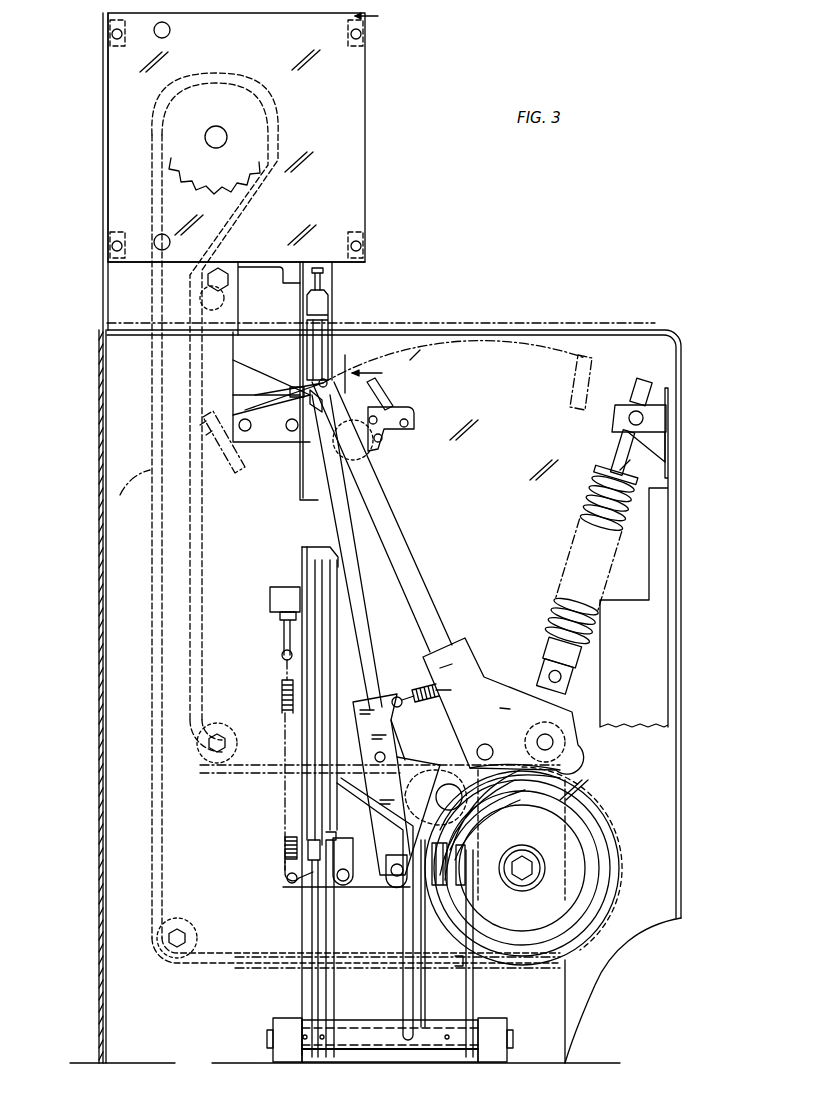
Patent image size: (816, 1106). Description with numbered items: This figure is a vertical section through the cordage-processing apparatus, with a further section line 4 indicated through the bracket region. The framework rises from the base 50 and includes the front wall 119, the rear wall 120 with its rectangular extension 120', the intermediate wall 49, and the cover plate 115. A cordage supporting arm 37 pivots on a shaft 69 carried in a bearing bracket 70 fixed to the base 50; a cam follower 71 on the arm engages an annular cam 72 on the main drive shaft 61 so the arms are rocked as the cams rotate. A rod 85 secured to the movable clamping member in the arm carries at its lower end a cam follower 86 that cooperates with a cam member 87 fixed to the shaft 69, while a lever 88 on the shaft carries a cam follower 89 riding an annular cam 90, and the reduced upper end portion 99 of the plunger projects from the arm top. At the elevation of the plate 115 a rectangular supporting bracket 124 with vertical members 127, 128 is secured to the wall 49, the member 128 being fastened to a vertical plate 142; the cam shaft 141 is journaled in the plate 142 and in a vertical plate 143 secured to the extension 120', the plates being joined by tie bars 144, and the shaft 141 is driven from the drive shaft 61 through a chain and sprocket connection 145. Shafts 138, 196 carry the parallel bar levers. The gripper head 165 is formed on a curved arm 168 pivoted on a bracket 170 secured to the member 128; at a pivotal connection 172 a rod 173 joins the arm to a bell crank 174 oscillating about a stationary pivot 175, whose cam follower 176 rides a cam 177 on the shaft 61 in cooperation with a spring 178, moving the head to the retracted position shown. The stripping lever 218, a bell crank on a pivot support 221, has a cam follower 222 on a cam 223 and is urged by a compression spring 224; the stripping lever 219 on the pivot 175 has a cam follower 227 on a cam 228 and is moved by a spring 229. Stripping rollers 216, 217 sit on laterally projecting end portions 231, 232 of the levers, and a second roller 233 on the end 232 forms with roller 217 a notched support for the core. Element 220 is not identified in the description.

The section line 4 is at (370, 200).
The cordage supporting arm 37 is at (301, 573).
The intermediate wall 49 is at (103, 358).
The base 50 is at (210, 1062).
The main drive shaft 61 is at (528, 860).
The shaft 69 is at (273, 1039).
The bearing bracket 70 is at (304, 1018).
The cam follower 71 is at (428, 900).
The annular cam 72 is at (451, 954).
The rod 85 is at (285, 838).
The cam follower 86 is at (285, 868).
The cam member 87 is at (310, 910).
The lever 88 is at (474, 982).
The cam follower 89 is at (468, 848).
The annular cam 90 is at (491, 922).
The reduced upper end portion 99 is at (323, 278).
The cover plate 115 is at (548, 326).
The front wall 119 is at (681, 588).
The rear wall 120 is at (84, 696).
The rectangular extension 120' is at (81, 193).
The rectangular supporting bracket 124 is at (233, 364).
The vertical member 127 is at (238, 314).
The vertical member 128 is at (233, 394).
The shaft 138 is at (156, 240).
The cam shaft 141 is at (226, 128).
The vertical plate 142 is at (108, 287).
The vertical plate 143 is at (365, 107).
The tie bar 144 is at (110, 40).
The chain and sprocket connection 145 is at (133, 482).
The gripper head 165 is at (380, 454).
The curved arm 168 is at (384, 440).
The bracket 170 is at (243, 444).
The pivotal connection 172 is at (372, 480).
The rod 173 is at (345, 525).
The bell crank 174 is at (368, 888).
The stationary pivot 175 is at (400, 890).
The cam follower 176 is at (425, 752).
The cam 177 is at (482, 825).
The spring 178 is at (282, 694).
The shaft 196 is at (168, 36).
The stripping roller 216 is at (327, 380).
The stripping roller 217 is at (320, 381).
The stripping lever 218 is at (429, 584).
The stripping lever 219 is at (226, 476).
The link 220 is at (388, 395).
The pivot support 221 is at (484, 744).
The cam follower 222 is at (578, 742).
The cam 223 is at (570, 783).
The compression spring 224 is at (584, 506).
The cam follower 227 is at (446, 773).
The cam 228 is at (485, 818).
The spring 229 is at (422, 688).
The laterally projecting end portion 231 is at (330, 398).
The laterally projecting end portion 232 is at (271, 400).
The second roller 233 is at (290, 391).